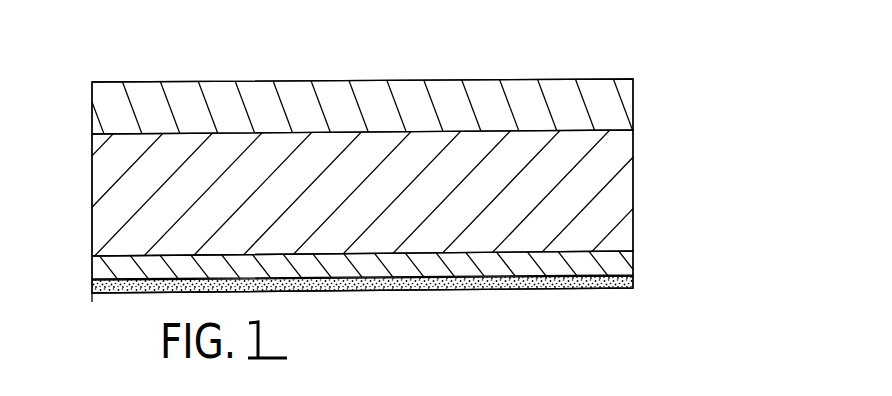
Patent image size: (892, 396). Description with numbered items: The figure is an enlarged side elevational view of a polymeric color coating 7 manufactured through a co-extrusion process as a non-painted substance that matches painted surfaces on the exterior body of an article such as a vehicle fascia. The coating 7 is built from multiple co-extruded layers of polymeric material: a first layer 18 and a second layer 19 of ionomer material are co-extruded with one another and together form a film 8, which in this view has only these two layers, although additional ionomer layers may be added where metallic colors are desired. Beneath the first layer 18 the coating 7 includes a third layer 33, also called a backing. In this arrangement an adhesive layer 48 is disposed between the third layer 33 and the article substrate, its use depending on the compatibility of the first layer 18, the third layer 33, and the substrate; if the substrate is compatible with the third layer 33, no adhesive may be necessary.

The polymer coating 7 is at (89, 72).
The film 8 is at (386, 160).
The second layer 19 is at (633, 103).
The first layer 18 is at (633, 172).
The third layer 33 is at (633, 260).
The adhesive layer 48 is at (633, 283).